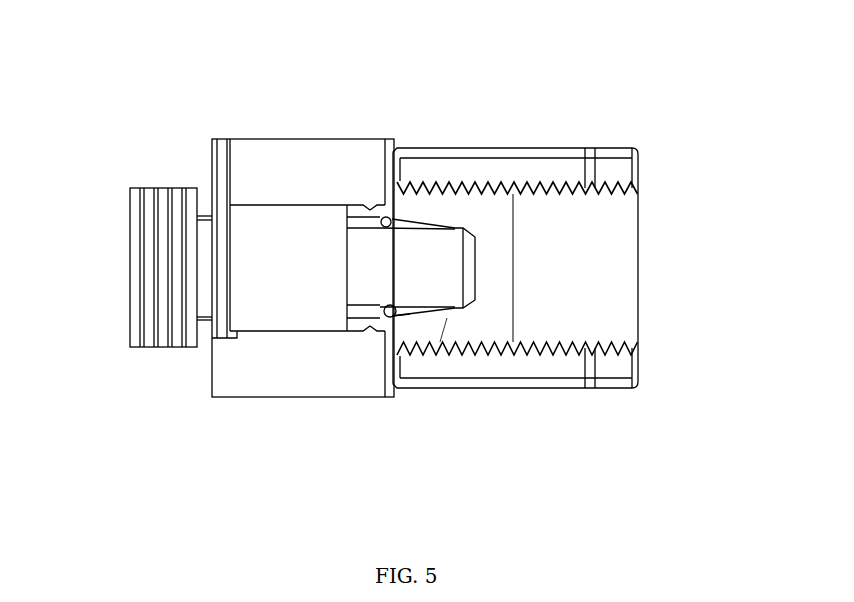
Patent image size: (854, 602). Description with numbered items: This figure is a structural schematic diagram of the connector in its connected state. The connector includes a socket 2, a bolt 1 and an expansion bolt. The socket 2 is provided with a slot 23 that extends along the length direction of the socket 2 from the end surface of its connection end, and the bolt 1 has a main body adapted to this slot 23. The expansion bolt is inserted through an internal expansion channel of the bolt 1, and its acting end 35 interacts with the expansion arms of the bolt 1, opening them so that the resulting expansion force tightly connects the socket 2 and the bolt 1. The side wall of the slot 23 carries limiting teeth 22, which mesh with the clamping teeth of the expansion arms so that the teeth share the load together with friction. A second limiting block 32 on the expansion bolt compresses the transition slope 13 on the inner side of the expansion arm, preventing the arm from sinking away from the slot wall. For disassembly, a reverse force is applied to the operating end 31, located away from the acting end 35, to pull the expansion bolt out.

The bolt 1 is at (303, 198).
The socket 2 is at (515, 199).
The transition slope 13 is at (456, 412).
The limiting teeth 22 is at (563, 346).
The slot 23 is at (632, 240).
The operating end 31 is at (127, 202).
The second limiting block 32 is at (304, 359).
The acting end 35 is at (411, 172).